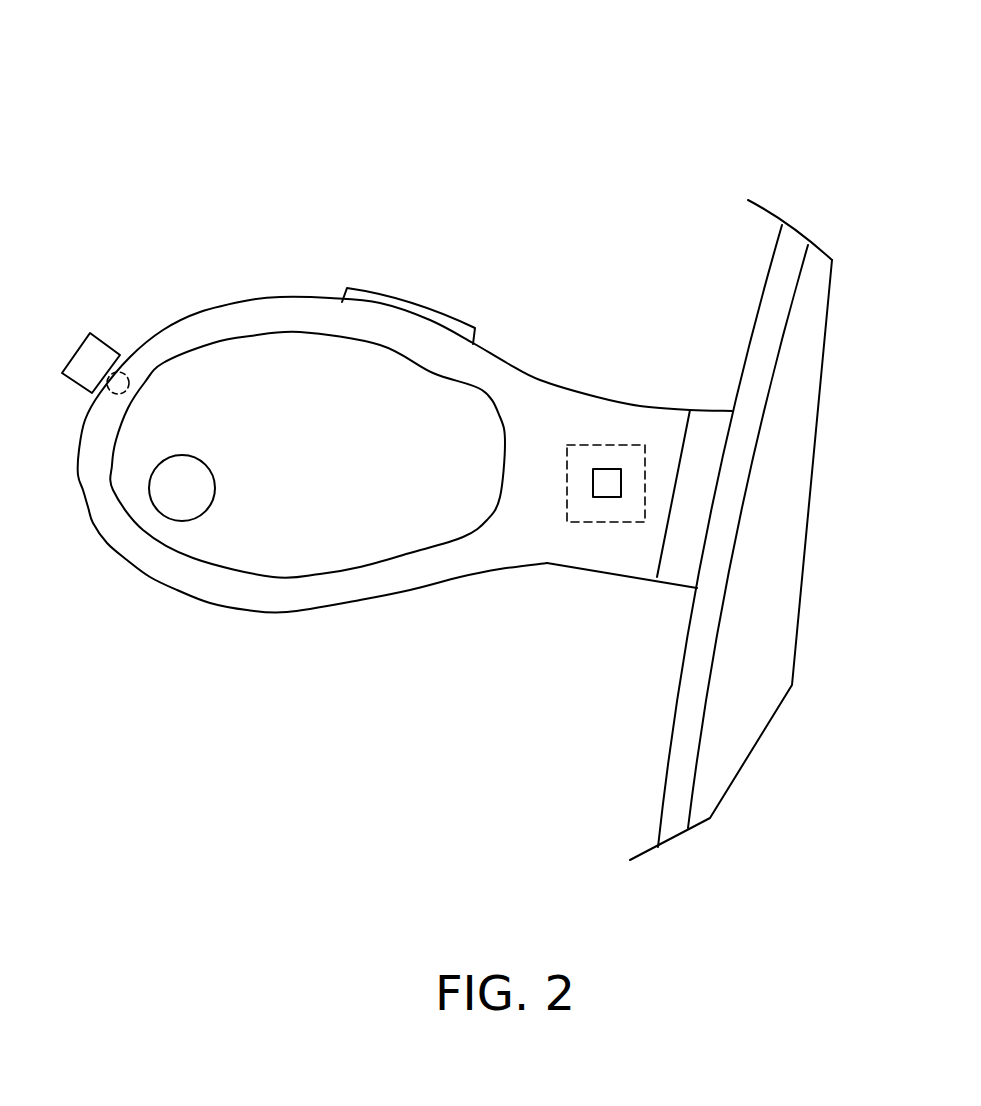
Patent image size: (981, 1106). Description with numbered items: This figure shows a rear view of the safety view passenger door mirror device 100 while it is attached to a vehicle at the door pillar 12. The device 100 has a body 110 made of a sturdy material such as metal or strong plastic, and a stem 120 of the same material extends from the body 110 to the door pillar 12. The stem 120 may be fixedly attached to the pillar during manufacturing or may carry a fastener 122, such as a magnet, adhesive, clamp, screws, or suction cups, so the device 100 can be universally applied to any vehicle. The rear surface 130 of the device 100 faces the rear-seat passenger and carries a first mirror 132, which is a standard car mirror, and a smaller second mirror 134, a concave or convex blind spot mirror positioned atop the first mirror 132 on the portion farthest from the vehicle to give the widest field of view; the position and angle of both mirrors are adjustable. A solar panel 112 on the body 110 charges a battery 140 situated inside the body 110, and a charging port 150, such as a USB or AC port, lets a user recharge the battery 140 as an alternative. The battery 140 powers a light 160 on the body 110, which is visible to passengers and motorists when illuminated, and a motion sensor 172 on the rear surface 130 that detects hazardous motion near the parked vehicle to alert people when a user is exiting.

The door pillar 12 is at (765, 290).
The safety view passenger door mirror device 100 is at (175, 112).
The body 110 is at (260, 262).
The solar panel 112 is at (440, 314).
The stem 120 is at (593, 520).
The fastener 122 is at (663, 583).
The rear surface 130 is at (252, 595).
The first mirror 132 is at (363, 543).
The second mirror 134 is at (160, 515).
The battery 140 is at (597, 445).
The charging port 150 is at (592, 480).
The light 160 is at (72, 357).
The motion sensor 172 is at (110, 391).